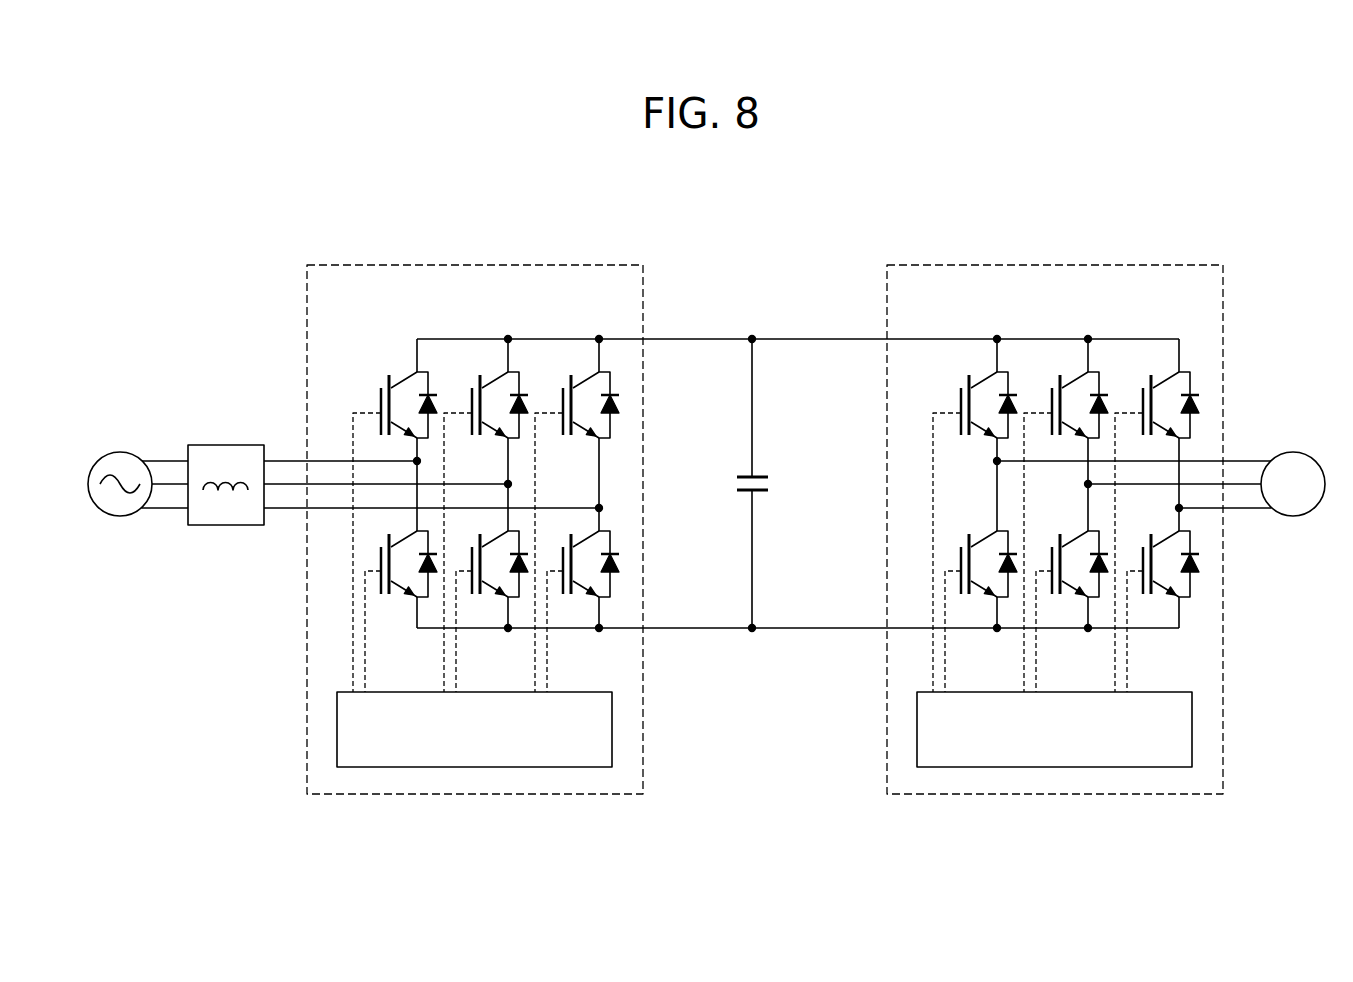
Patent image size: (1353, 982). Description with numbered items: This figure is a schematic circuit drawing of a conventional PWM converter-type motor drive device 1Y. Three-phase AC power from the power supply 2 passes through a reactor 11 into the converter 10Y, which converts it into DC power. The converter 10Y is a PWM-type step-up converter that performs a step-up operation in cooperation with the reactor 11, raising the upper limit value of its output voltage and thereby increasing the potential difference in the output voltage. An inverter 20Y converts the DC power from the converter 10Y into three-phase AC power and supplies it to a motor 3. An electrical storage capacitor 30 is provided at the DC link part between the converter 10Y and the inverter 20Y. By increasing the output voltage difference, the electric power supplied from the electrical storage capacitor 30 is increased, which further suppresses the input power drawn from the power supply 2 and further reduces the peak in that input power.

The motor drive device 1Y is at (1233, 128).
The converter 10Y is at (543, 265).
The inverter 20Y is at (1123, 265).
The power supply 2 is at (112, 452).
The reactor 11 is at (228, 444).
The electrical storage capacitor 30 is at (762, 476).
The motor 3 is at (1297, 454).